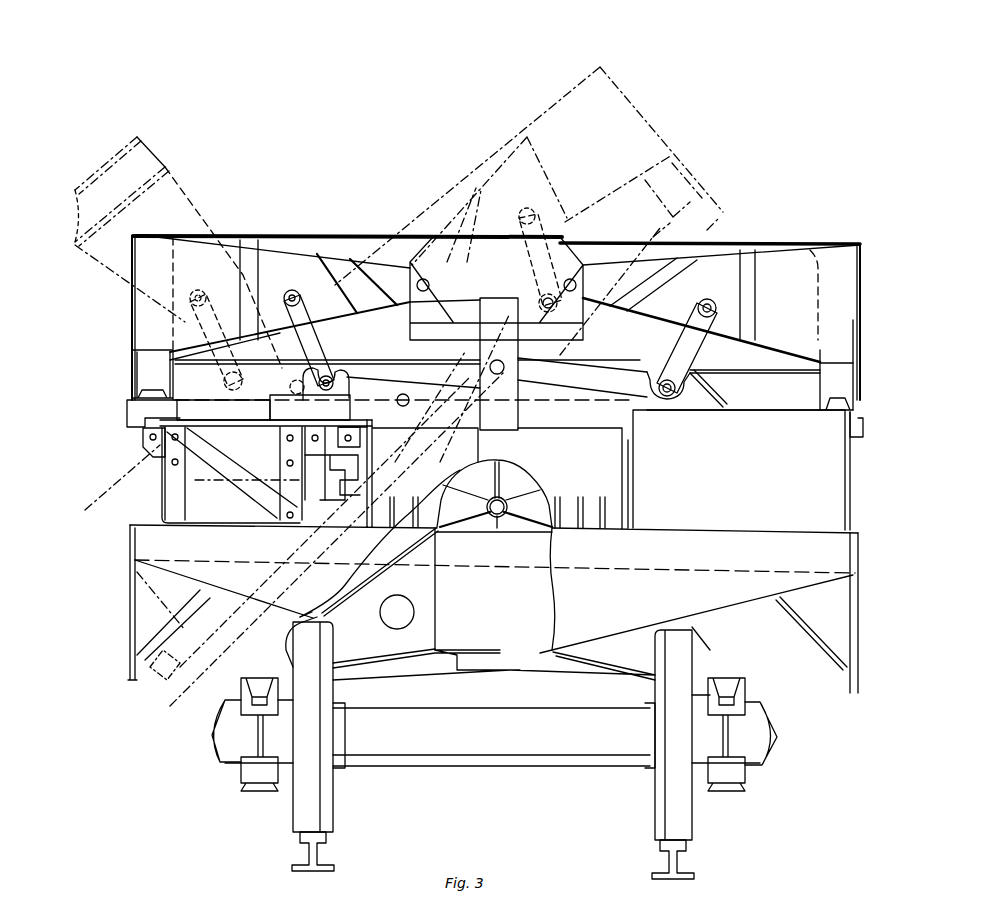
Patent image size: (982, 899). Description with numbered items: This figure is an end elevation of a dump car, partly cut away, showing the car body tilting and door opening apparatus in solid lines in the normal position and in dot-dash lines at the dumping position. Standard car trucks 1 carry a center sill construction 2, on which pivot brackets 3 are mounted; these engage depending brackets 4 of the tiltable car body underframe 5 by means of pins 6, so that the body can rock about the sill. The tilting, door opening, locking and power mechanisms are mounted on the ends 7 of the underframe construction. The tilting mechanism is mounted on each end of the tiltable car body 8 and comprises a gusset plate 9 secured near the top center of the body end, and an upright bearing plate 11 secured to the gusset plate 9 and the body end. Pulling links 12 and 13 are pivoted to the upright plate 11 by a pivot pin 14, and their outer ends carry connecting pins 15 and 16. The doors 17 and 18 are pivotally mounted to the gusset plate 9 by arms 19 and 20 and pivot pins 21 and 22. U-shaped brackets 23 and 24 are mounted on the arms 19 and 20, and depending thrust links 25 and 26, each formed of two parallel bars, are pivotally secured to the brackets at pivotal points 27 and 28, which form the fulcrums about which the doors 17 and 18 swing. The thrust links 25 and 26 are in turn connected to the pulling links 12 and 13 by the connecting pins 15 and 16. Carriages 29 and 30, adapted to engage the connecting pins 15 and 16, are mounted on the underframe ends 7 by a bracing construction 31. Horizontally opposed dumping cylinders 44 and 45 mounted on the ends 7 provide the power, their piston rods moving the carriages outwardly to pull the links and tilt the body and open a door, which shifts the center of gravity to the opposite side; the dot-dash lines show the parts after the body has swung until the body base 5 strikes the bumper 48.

The car trucks 1 is at (373, 733).
The center sill construction 2 is at (455, 617).
The pivot brackets 3 is at (487, 520).
The depending brackets 4 is at (475, 487).
The tiltable car body underframe 5 is at (133, 418).
The pins 6 is at (500, 514).
The ends of the car underframe construction 7 is at (741, 486).
The tiltable car body 8 is at (434, 314).
The gusset plate 9 is at (500, 238).
The upright bearing plate 11 is at (497, 318).
The pulling link 12 is at (435, 372).
The pulling link 13 is at (587, 380).
The pivot pin 14 is at (492, 364).
The connecting pin 15 is at (330, 370).
The connecting pin 16 is at (663, 380).
The door 17 is at (138, 158).
The door 18 is at (818, 388).
The arm 19 is at (210, 253).
The arm 20 is at (787, 263).
The pivot pin 21 is at (425, 282).
The pivot pin 22 is at (570, 280).
The U-shaped bracket 23 is at (283, 270).
The U-shaped bracket 24 is at (720, 258).
The depending thrust link 25 is at (303, 340).
The depending thrust link 26 is at (688, 353).
The pivotal point 27 is at (204, 297).
The pivotal point 28 is at (706, 302).
The carriage 29 is at (262, 404).
The carriage 30 is at (700, 398).
The bracing construction 31 is at (177, 478).
The dumping cylinder 44 is at (433, 433).
The dumping cylinder 45 is at (599, 480).
The bumper 48 is at (310, 617).